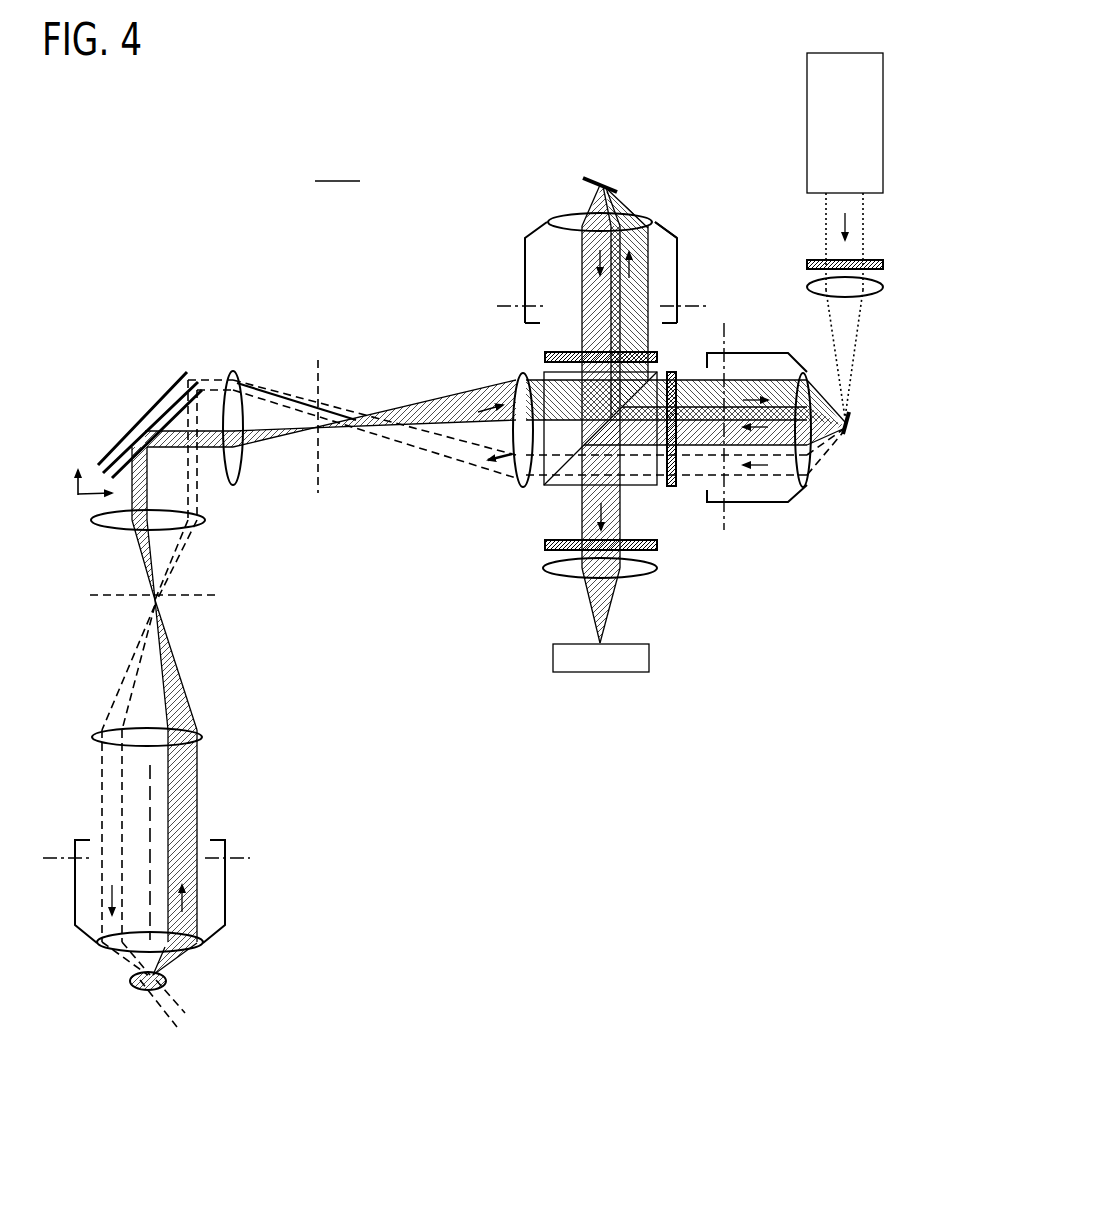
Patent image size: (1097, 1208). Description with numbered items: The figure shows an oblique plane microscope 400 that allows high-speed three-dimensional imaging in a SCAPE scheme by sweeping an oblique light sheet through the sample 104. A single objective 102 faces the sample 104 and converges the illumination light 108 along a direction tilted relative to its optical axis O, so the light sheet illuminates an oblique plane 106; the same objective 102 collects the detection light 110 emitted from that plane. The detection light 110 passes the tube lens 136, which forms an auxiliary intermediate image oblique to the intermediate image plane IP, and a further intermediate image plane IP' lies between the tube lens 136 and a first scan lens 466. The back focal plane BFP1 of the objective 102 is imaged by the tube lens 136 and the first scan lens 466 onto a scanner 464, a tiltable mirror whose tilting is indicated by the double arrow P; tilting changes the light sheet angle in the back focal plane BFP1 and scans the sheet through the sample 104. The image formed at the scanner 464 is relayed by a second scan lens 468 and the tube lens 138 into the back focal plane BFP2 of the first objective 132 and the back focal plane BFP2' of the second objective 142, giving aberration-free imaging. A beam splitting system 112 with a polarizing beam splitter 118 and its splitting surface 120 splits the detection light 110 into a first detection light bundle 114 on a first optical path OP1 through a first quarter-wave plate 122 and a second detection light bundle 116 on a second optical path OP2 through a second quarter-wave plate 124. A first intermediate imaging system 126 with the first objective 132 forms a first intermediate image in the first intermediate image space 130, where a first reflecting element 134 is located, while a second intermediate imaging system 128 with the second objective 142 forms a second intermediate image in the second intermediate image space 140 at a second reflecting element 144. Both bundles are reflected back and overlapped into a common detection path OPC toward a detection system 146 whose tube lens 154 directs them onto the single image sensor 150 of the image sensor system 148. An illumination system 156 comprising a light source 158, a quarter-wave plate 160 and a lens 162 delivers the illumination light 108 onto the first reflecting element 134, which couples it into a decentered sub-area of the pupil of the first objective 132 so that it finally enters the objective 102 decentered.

The oblique plane microscope 400 is at (337, 168).
The objective 102 is at (227, 912).
The sample 104 is at (130, 980).
The plane 106 is at (185, 1025).
The illumination light 108 is at (113, 758).
The detection light 110 is at (192, 822).
The beam splitting system 112 is at (455, 505).
The first detection light bundle 114 is at (750, 385).
The second detection light bundle 116 is at (640, 247).
The polarizing beam splitter 118 is at (560, 446).
The splitting surface 120 is at (614, 430).
The first quarter-wave plate 122 is at (672, 487).
The second quarter-wave plate 124 is at (545, 356).
The first intermediate imaging system 126 is at (886, 487).
The second intermediate imaging system 128 is at (503, 226).
The first intermediate image space 130 is at (846, 436).
The first objective 132 is at (800, 497).
The first reflecting element 134 is at (852, 418).
The tube lens 136 is at (198, 730).
The tube lens 138 is at (518, 376).
The second intermediate image space 140 is at (594, 198).
The second objective 142 is at (662, 236).
The second reflecting element 144 is at (597, 178).
The detection system 146 is at (727, 634).
The image sensor system 148 is at (575, 673).
The image sensor 150 is at (630, 663).
The tube lens 154 is at (560, 577).
The illumination system 156 is at (883, 122).
The light source 158 is at (818, 122).
The quarter-wave plate 160 is at (883, 265).
The lens 162 is at (872, 293).
The scanner 464 is at (144, 432).
The first scan lens 466 is at (108, 524).
The second scan lens 468 is at (236, 373).
The double arrow P is at (78, 494).
The intermediate image plane IP is at (347, 377).
The intermediate image plane IP' is at (208, 632).
The optical axis O is at (150, 788).
The first optical path OP1 is at (698, 392).
The second optical path OP2 is at (640, 276).
The common detection path OPC is at (585, 517).
The back focal plane BFP1 is at (250, 858).
The back focal plane BFP2 is at (768, 544).
The back focal plane BFP2' is at (485, 275).